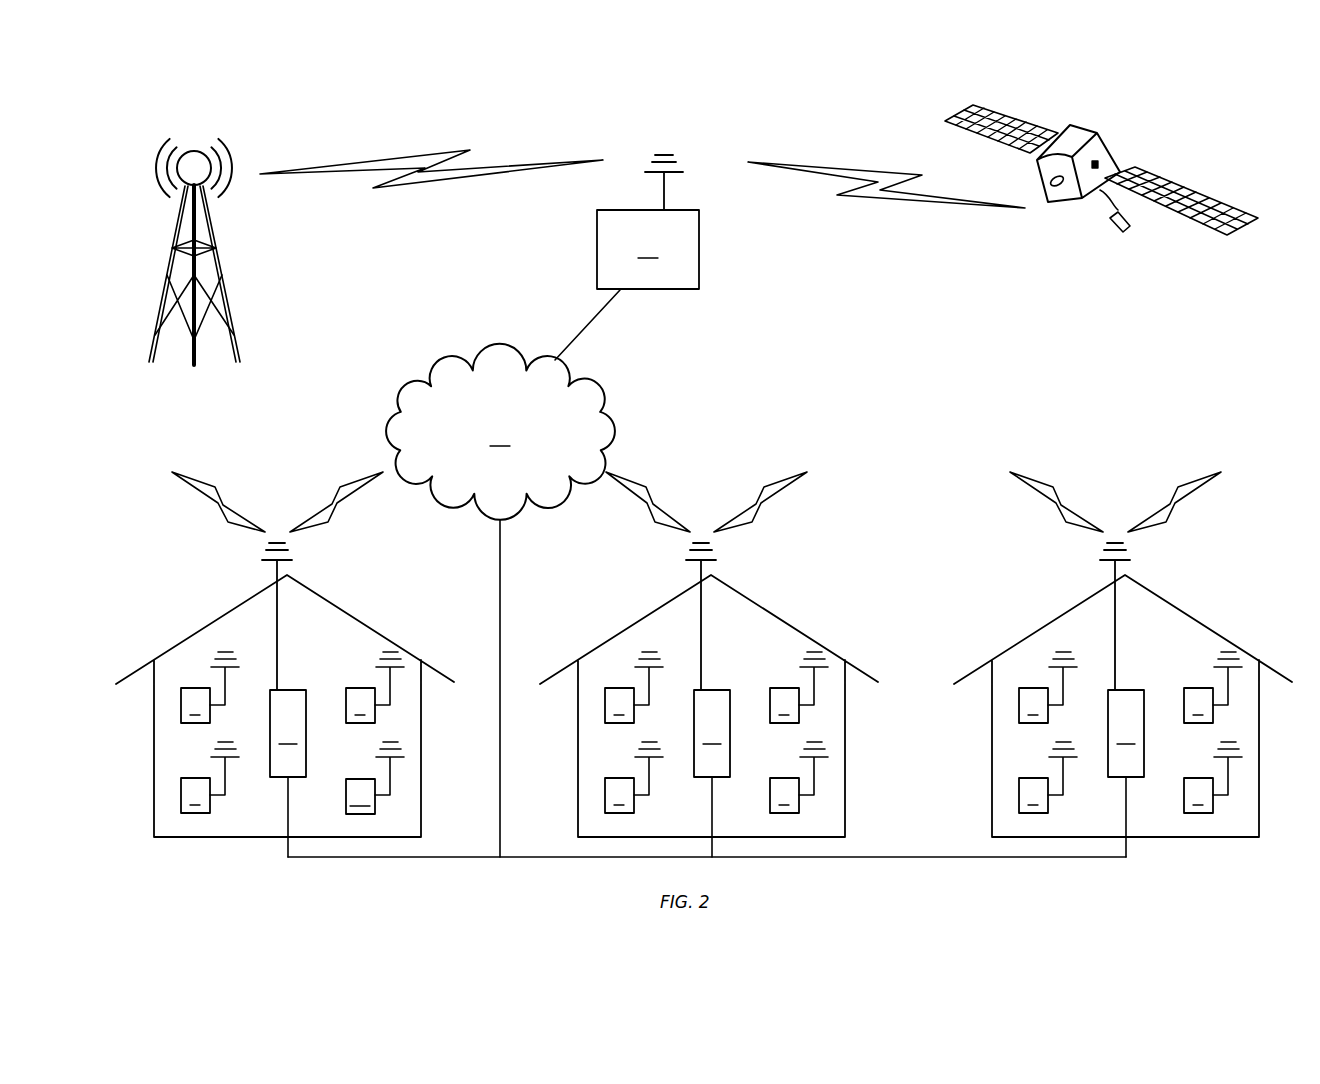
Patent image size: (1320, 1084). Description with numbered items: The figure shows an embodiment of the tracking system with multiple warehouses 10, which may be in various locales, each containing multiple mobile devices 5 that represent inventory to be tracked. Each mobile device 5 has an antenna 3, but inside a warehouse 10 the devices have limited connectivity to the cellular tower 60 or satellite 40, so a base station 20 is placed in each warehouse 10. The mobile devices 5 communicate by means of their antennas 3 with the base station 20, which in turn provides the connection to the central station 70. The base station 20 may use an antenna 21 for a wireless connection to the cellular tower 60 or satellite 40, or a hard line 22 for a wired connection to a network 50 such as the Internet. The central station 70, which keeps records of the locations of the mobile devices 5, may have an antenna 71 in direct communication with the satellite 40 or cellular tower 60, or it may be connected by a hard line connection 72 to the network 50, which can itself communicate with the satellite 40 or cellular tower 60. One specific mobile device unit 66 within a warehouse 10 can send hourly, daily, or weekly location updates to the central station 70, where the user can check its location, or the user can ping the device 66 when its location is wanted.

The antenna 3 is at (217, 673).
The mobile device 5 is at (697, 750).
The warehouse 10 is at (219, 618).
The base station 20 is at (707, 733).
The antenna 21 is at (272, 563).
The hard line connection 22 is at (288, 804).
The satellite 40 is at (1112, 147).
The network 50 is at (500, 600).
The cellular tower 60 is at (223, 253).
The mobile device unit 66 is at (360, 796).
The central station 70 is at (648, 249).
The antenna 71 is at (669, 177).
The hard line connection 72 is at (621, 292).